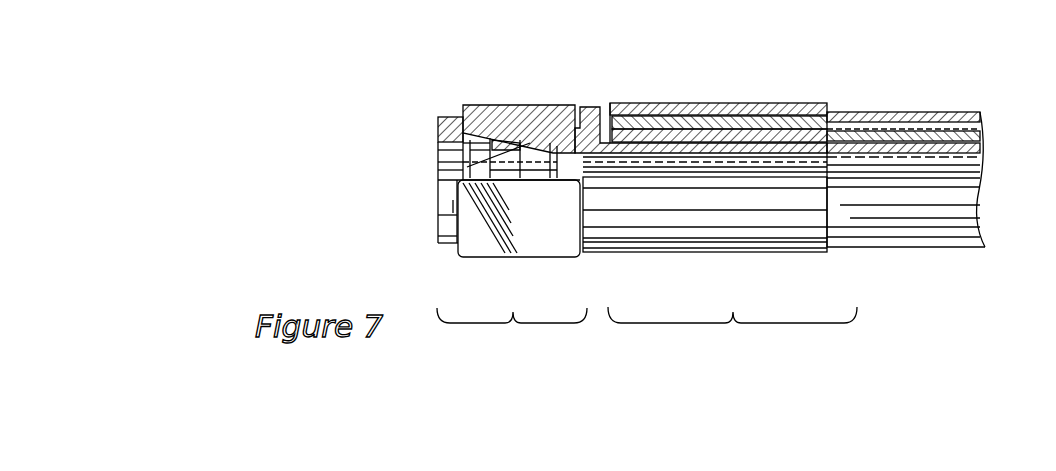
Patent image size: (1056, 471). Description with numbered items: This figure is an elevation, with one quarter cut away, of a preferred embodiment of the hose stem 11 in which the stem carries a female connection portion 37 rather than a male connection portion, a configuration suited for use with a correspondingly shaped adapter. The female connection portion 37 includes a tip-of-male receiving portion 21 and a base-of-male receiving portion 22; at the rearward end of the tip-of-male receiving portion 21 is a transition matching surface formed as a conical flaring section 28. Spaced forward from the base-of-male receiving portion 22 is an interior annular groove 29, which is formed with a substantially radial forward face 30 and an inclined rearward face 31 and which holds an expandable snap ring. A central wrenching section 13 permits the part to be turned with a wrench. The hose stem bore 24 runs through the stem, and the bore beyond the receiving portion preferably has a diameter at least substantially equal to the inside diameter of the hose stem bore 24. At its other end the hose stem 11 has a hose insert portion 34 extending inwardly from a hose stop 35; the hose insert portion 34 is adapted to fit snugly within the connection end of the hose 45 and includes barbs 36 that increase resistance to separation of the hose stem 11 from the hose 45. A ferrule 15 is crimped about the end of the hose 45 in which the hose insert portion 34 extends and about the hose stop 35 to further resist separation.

The hose stem 11 is at (392, 124).
The central wrenching section 13 is at (553, 257).
The ferrule 15 is at (805, 108).
The tip-of-male receiving portion 21 is at (572, 104).
The base-of-male receiving portion 22 is at (437, 143).
The hose stem bore 24 is at (660, 162).
The conical flaring section 28 is at (445, 172).
The interior annular groove 29 is at (462, 135).
The radial forward face 30 is at (513, 105).
The inclined rearward face 31 is at (452, 127).
The hose insert portion 34 is at (720, 261).
The hose stop 35 is at (613, 117).
The barbs 36 is at (713, 130).
The female connection portion 37 is at (512, 330).
The hose 45 is at (880, 110).